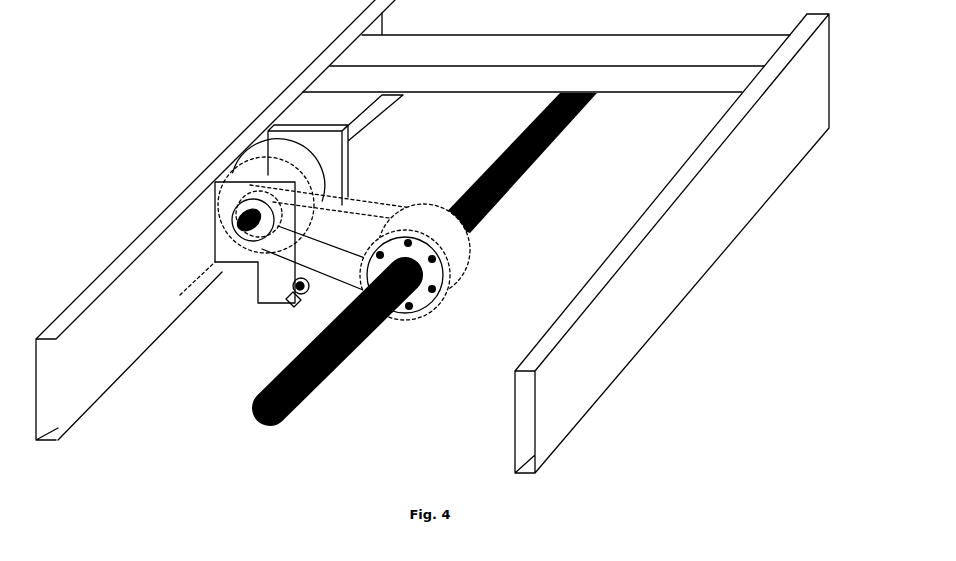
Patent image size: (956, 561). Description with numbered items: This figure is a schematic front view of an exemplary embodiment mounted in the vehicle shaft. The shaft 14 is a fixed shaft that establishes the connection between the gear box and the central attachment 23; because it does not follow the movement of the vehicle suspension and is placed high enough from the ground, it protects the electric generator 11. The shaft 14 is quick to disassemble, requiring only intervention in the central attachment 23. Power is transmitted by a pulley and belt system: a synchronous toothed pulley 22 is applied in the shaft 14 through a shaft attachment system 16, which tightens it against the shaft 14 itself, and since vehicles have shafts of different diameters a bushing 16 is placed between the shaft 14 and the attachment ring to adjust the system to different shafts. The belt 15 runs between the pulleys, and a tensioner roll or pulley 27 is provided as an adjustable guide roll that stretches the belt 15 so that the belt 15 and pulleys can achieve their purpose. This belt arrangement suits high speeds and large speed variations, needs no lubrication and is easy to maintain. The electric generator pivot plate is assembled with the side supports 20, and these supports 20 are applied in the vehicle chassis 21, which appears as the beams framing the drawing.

The electric generator 11 is at (281, 149).
The shaft 14 is at (523, 175).
The belt 15 is at (355, 206).
The shaft attachment system 16 is at (425, 315).
The side support 20 is at (339, 147).
The vehicle chassis 21 is at (120, 253).
The synchronous toothed pulley 22 is at (247, 202).
The central attachment 23 is at (617, 58).
The tensioner roll or pulley 27 is at (304, 294).